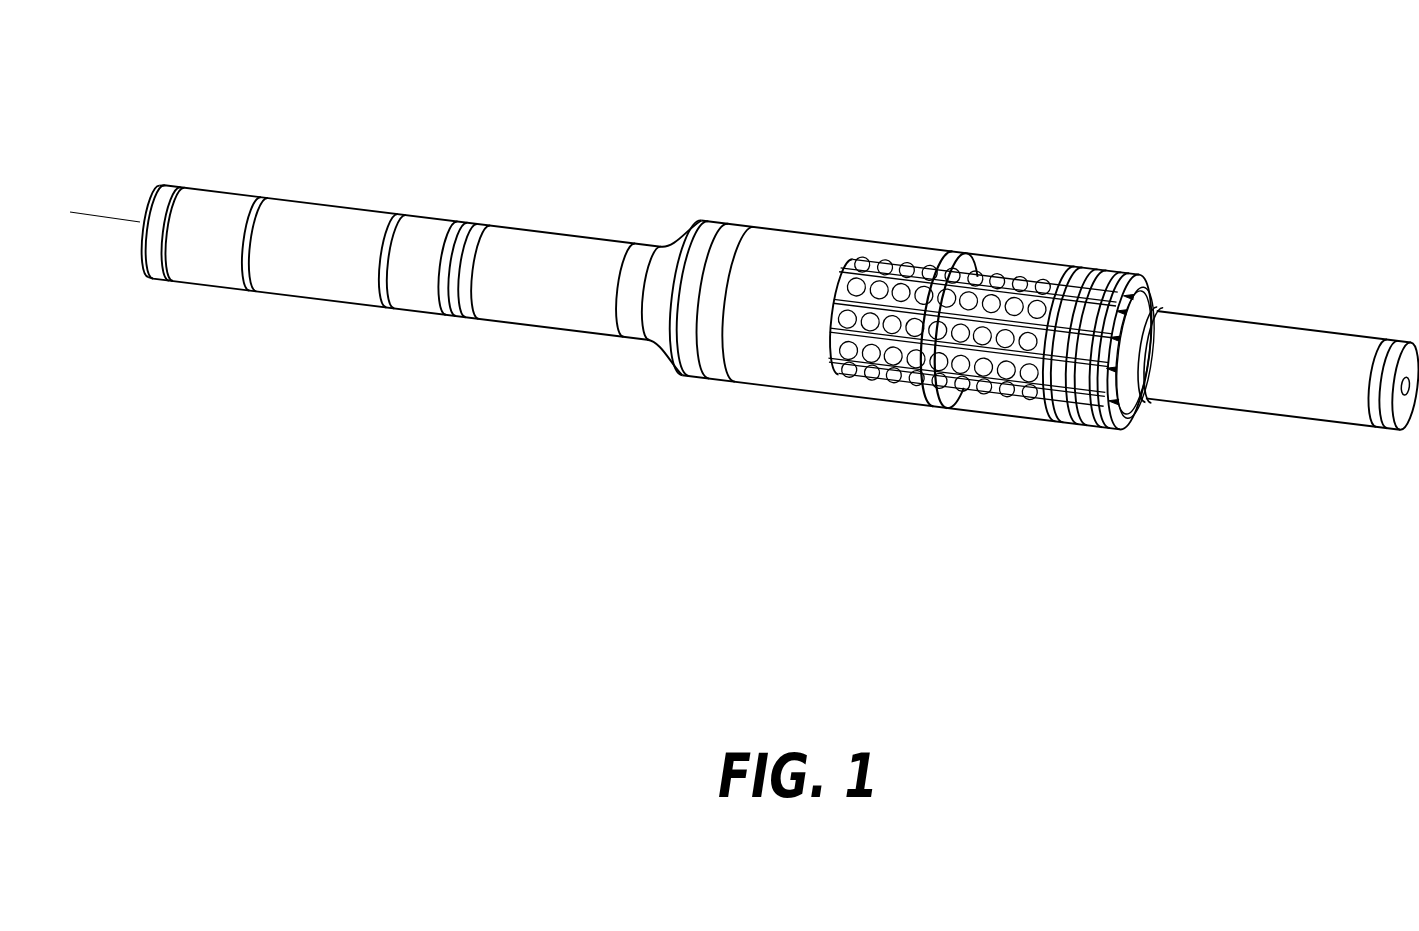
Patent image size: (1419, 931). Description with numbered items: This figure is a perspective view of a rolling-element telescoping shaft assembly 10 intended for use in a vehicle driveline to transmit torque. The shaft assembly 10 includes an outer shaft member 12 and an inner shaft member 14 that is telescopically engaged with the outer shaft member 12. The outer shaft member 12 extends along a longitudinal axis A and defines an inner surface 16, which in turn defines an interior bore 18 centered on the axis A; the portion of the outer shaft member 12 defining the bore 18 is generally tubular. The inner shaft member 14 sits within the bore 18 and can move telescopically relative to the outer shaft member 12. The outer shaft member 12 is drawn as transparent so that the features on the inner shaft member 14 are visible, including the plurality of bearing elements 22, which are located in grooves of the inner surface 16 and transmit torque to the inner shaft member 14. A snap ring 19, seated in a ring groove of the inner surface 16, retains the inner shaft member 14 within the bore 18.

The shaft assembly 10 is at (1263, 101).
The outer shaft member 12 is at (330, 205).
The inner shaft member 14 is at (1389, 342).
The inner surface 16 is at (1121, 398).
The interior bore 18 is at (798, 333).
The snap ring 19 is at (1123, 292).
The bearing elements 22 is at (1022, 288).
The longitudinal axis A is at (92, 211).